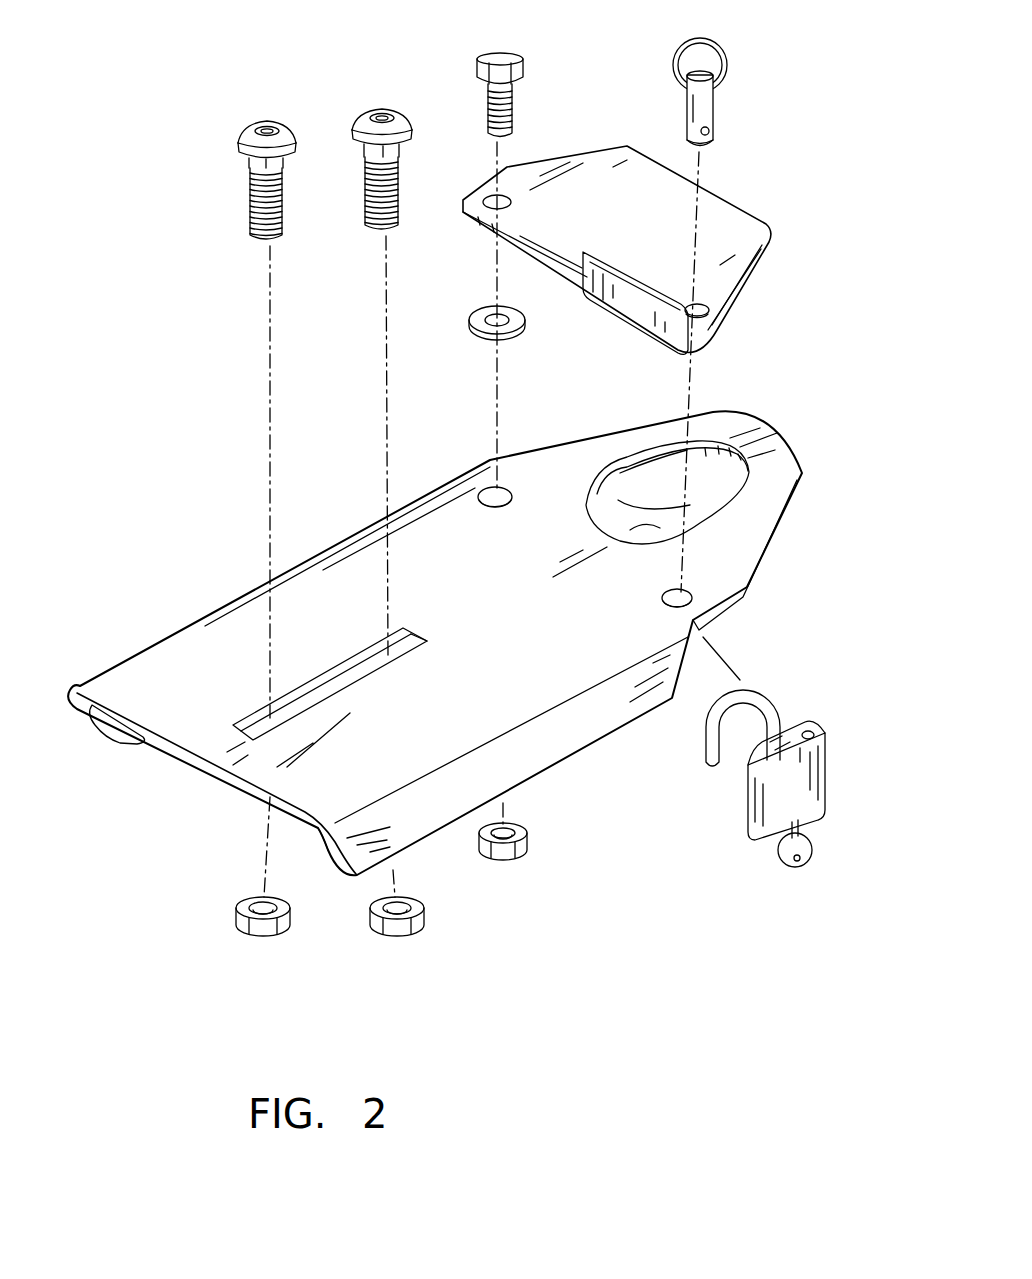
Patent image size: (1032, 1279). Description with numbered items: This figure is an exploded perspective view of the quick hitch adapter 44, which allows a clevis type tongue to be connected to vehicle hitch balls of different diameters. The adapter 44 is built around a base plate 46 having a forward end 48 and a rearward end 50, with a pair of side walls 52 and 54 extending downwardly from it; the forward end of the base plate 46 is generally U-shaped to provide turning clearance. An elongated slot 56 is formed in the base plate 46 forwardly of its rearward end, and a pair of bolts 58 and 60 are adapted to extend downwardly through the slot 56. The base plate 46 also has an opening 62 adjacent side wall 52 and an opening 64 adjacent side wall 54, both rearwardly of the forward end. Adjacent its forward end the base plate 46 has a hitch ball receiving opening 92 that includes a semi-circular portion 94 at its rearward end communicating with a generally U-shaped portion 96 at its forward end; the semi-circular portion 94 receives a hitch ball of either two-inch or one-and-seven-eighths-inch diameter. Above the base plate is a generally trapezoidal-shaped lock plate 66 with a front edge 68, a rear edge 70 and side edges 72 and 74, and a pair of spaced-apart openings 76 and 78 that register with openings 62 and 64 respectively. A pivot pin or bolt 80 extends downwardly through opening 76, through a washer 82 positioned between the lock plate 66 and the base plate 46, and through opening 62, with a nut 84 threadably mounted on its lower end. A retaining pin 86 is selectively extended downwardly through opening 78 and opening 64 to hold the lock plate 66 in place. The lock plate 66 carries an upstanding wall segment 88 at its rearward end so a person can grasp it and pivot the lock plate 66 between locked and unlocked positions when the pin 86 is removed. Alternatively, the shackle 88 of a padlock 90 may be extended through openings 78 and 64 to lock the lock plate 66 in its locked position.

The quick hitch adapter 44 is at (193, 600).
The base plate 46 is at (233, 785).
The forward end 48 is at (813, 433).
The rearward end 50 is at (185, 863).
The side wall 52 is at (123, 739).
The side wall 54 is at (360, 673).
The elongated slot 56 is at (587, 713).
The bolt 58 is at (240, 128).
The bolt 60 is at (380, 108).
The opening 62 is at (480, 494).
The opening 64 is at (695, 594).
The lock plate 66 is at (636, 238).
The front edge 68 is at (753, 213).
The rear edge 70 is at (570, 280).
The side edge 72 is at (563, 153).
The side edge 74 is at (740, 303).
The opening 76 is at (467, 217).
The opening 78 is at (699, 300).
The pivot pin or bolt 80 is at (500, 60).
The washer 82 is at (475, 330).
The nut 84 is at (513, 853).
The retaining pin 86 is at (703, 117).
The upstanding wall segment / shackle 88 is at (640, 318).
The padlock 90 is at (810, 749).
The hitch ball receiving opening 92 is at (710, 500).
The semi-circular portion 94 is at (613, 523).
The U-shaped portion 96 is at (705, 467).